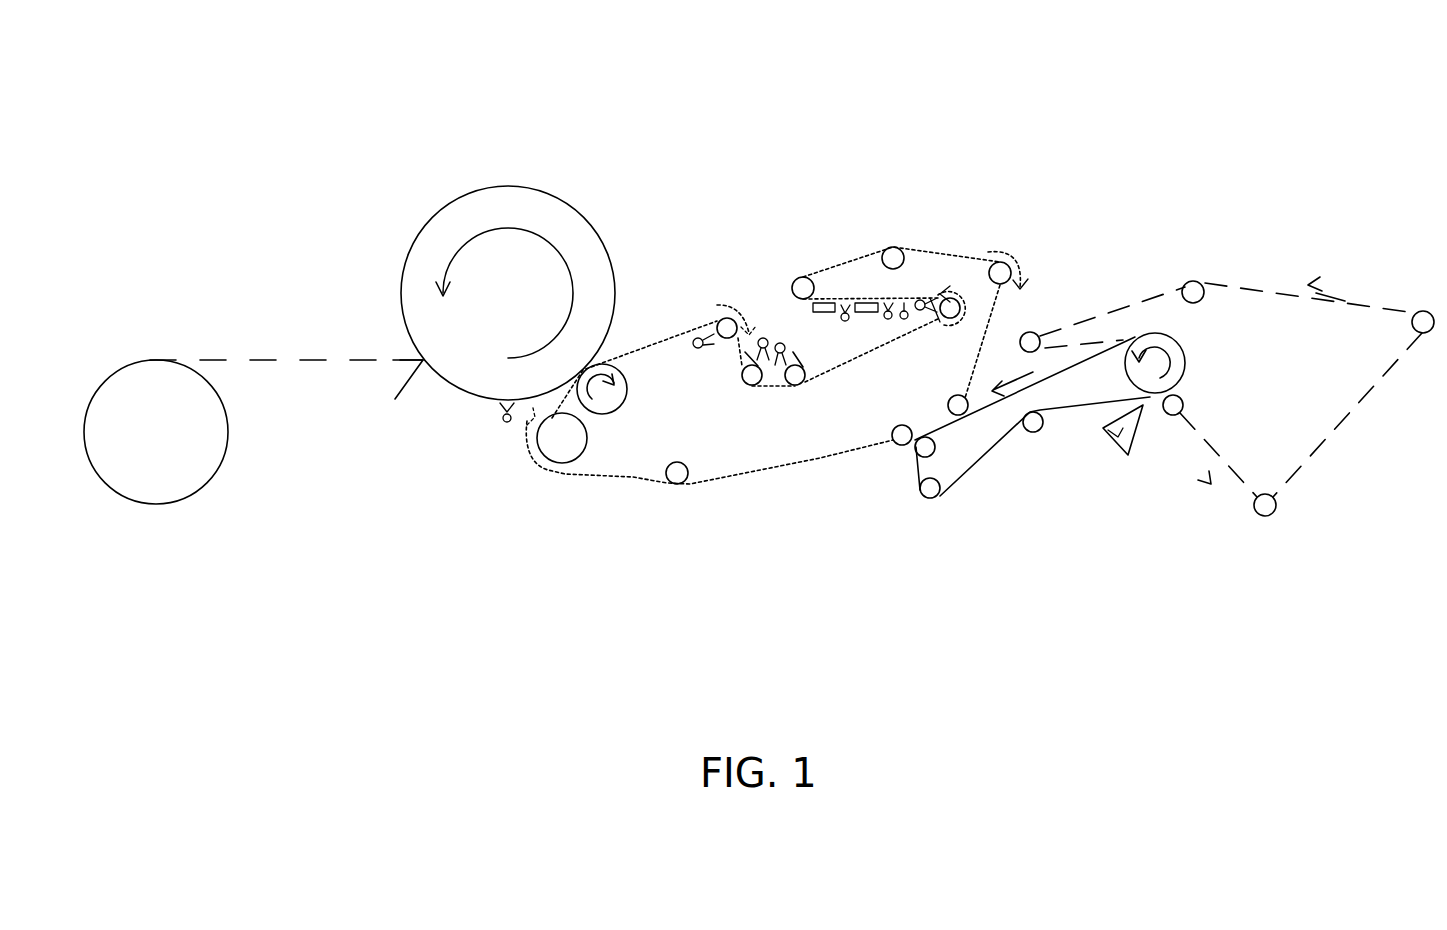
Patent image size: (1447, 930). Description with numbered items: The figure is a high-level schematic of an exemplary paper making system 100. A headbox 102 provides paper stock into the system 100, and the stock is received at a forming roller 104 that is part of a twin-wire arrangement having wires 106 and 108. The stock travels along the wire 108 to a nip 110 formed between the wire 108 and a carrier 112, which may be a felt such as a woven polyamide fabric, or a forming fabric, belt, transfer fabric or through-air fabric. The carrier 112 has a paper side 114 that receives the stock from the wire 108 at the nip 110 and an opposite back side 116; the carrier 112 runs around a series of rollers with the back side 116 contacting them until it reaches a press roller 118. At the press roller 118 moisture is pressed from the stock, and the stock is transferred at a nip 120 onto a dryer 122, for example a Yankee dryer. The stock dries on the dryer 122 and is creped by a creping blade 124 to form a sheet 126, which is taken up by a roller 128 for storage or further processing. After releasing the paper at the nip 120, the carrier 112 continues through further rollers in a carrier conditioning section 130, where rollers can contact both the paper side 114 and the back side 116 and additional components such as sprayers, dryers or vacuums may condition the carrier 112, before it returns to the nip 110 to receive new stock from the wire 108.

The paper making system 100 is at (352, 99).
The headbox 102 is at (1120, 442).
The forming roller 104 is at (1188, 349).
The wire 106 is at (1347, 427).
The wire 108 is at (1000, 450).
The nip 110 is at (920, 422).
The carrier 112 is at (738, 477).
The paper side 114 is at (614, 484).
The back side 116 is at (643, 468).
The press roller 118 is at (620, 368).
The nip 120 is at (614, 352).
The dryer 122 is at (562, 202).
The creping blade 124 is at (397, 388).
The sheet 126 is at (253, 358).
The roller 128 is at (223, 457).
The carrier conditioning section 130 is at (864, 220).